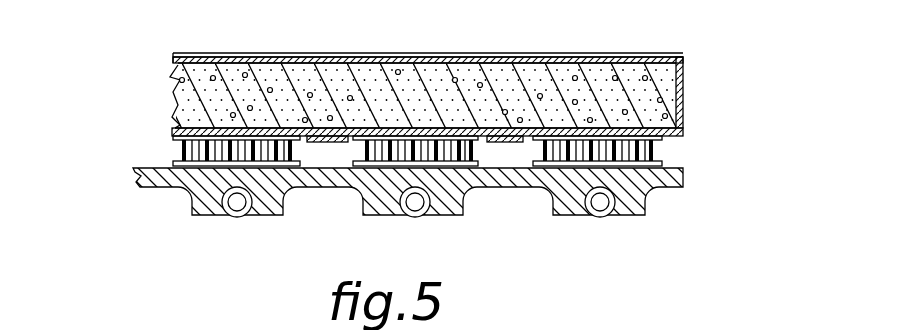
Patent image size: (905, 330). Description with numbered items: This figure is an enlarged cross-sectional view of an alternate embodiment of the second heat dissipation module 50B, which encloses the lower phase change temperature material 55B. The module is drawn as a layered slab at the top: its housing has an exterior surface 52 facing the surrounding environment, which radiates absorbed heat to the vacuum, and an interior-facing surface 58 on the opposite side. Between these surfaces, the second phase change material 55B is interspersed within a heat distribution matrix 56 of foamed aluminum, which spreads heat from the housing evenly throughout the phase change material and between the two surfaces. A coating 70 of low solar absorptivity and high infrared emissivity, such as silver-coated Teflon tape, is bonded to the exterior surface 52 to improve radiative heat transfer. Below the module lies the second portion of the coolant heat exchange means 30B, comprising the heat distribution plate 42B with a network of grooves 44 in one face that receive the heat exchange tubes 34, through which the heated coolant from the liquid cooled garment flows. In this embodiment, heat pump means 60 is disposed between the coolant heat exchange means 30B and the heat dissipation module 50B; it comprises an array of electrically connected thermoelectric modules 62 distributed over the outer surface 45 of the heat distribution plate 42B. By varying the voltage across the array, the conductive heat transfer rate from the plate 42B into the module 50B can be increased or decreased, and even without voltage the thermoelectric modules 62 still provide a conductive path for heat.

The second heat dissipation module 50B is at (403, 82).
The exterior surface 52 is at (192, 53).
The heat distribution matrix 56 is at (260, 73).
The second phase change material 55B is at (380, 78).
The coating 70 is at (517, 53).
The interior-facing surface 58 is at (677, 141).
The heat pump means 60 is at (157, 152).
The thermoelectric modules 62 is at (360, 157).
The outer surface 45 is at (511, 158).
The second portion of coolant heat exchange means 30B is at (421, 212).
The heat distribution plate 42B is at (162, 187).
The grooves 44 is at (240, 217).
The heat exchange tubes 34 is at (421, 216).